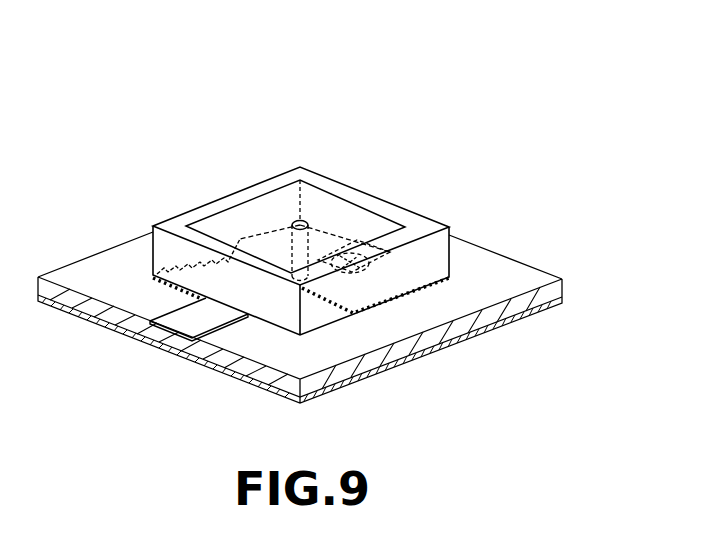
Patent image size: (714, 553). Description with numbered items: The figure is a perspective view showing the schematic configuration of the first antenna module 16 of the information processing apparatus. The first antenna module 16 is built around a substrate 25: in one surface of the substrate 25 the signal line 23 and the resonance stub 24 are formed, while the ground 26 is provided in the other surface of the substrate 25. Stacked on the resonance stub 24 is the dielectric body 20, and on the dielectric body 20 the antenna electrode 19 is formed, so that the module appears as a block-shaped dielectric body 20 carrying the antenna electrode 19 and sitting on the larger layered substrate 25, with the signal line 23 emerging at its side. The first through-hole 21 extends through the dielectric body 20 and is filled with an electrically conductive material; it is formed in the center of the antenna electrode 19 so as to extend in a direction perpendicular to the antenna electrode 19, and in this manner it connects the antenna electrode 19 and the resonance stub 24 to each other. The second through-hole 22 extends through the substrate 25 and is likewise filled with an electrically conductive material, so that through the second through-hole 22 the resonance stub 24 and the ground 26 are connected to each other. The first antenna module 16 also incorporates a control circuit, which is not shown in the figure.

The first antenna module 16 is at (524, 91).
The antenna electrode 19 is at (333, 207).
The dielectric body 20 is at (428, 260).
The first through-hole 21 is at (298, 222).
The second through-hole 22 is at (357, 247).
The signal line 23 is at (172, 318).
The resonance stub 24 is at (185, 270).
The substrate 25 is at (512, 280).
The ground 26 is at (517, 320).